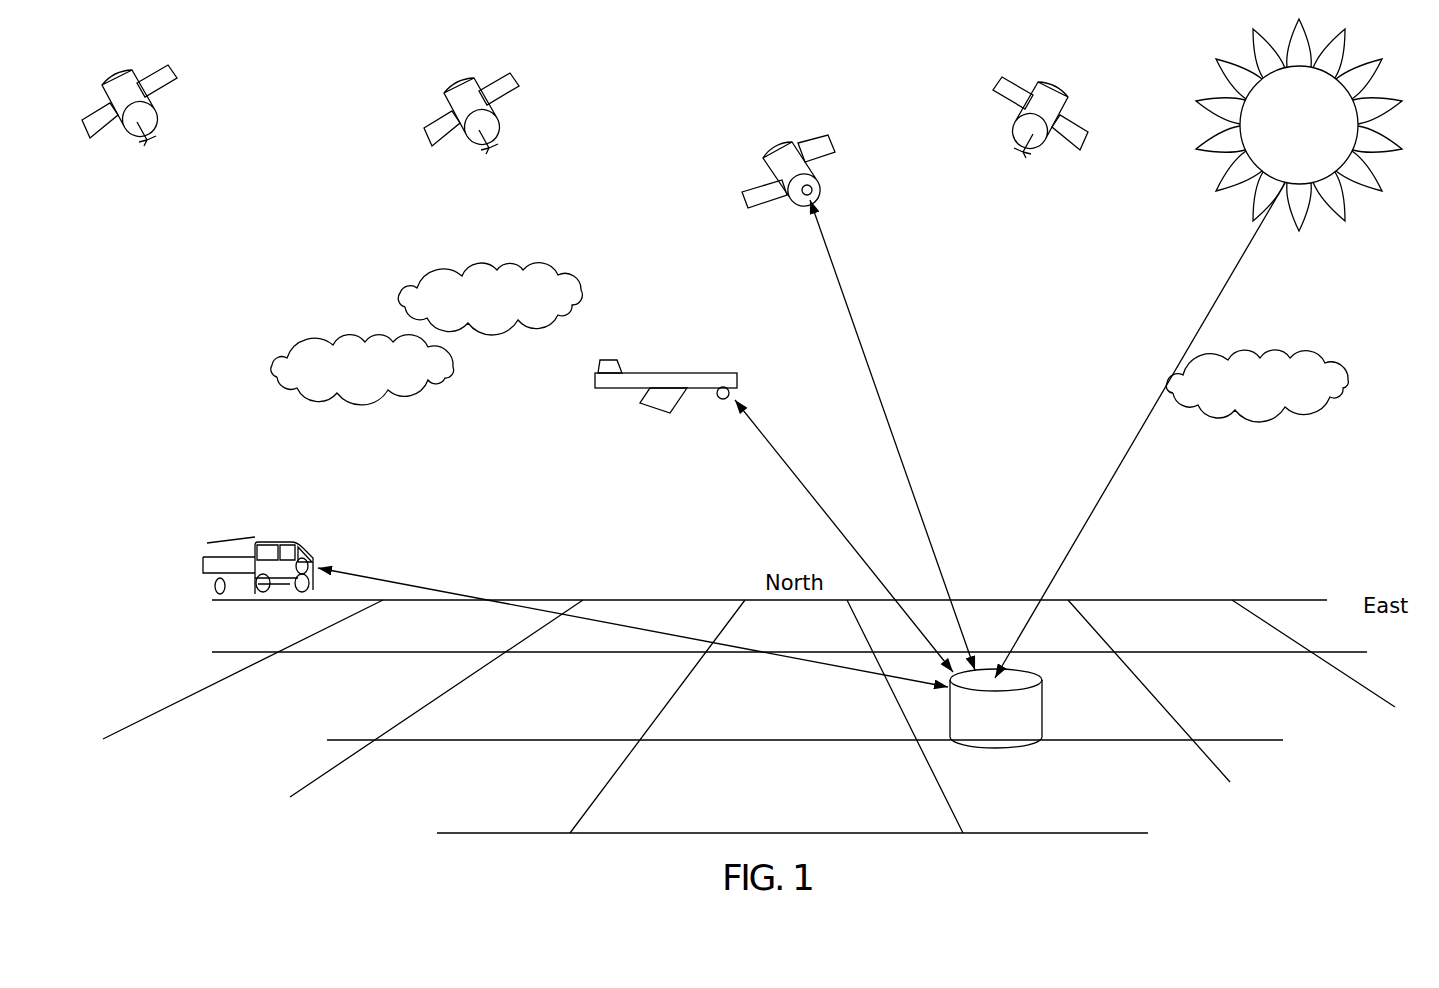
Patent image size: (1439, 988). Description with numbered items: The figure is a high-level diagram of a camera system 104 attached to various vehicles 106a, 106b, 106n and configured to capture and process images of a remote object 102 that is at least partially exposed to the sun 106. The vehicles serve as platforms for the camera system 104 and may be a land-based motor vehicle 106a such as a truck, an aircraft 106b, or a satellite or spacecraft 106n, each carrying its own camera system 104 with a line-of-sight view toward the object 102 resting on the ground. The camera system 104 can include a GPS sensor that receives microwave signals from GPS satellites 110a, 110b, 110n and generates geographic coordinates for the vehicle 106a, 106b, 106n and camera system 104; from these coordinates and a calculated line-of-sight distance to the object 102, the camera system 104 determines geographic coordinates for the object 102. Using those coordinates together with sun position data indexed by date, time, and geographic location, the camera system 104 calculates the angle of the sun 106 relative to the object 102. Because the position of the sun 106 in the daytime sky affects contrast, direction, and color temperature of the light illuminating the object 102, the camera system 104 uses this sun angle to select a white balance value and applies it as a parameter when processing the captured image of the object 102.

The object 102 is at (1044, 705).
The camera system 104 is at (813, 183).
The sun 106 is at (1357, 150).
The vehicle 106a is at (258, 542).
The vehicle 106b is at (657, 378).
The vehicle 106n is at (788, 142).
The GPS satellite 110a is at (152, 100).
The GPS satellite 110b is at (494, 108).
The GPS satellite 110n is at (1060, 95).